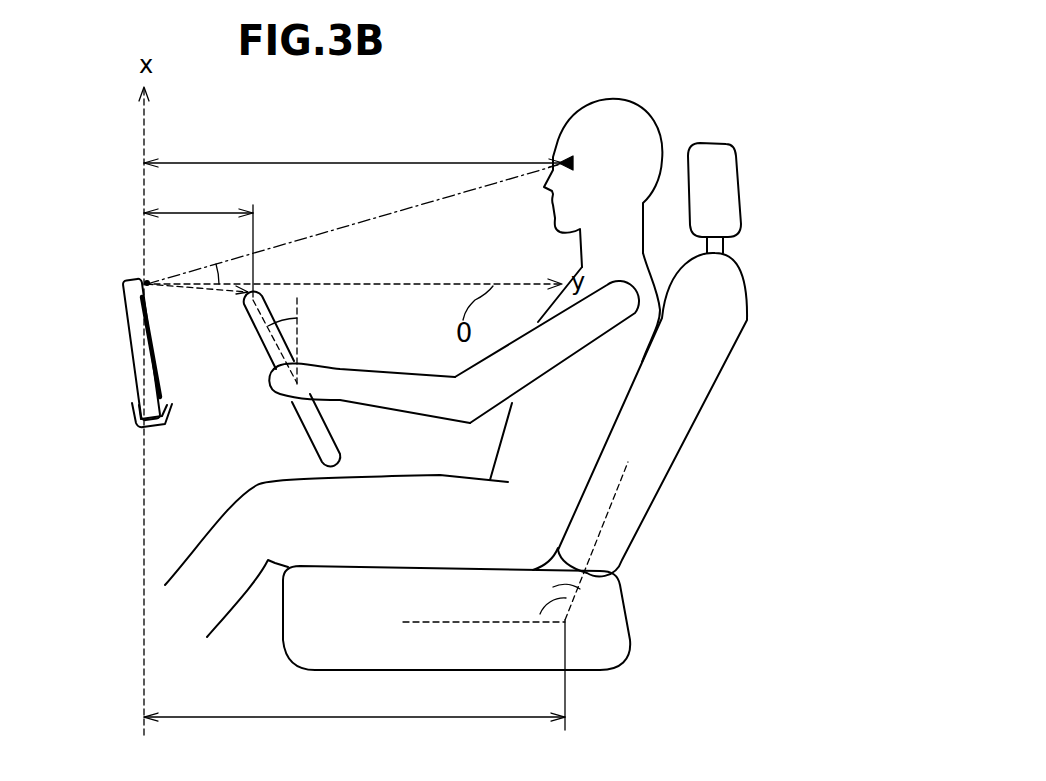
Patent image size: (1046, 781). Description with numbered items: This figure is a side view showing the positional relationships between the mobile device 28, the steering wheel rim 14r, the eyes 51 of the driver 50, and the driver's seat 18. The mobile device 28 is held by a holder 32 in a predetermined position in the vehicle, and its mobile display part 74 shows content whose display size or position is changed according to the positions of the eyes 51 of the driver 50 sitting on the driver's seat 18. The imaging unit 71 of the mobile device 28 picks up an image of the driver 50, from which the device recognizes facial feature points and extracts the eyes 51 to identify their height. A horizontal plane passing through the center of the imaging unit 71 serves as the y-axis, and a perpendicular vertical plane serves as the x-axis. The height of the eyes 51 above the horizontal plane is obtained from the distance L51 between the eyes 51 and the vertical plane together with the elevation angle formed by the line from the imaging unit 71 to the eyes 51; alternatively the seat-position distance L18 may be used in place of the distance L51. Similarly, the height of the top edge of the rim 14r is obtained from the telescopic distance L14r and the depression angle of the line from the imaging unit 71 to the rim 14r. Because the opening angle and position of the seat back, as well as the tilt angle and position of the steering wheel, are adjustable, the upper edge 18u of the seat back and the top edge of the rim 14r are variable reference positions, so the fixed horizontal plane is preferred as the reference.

The driver 50 is at (612, 100).
The eyes 51 is at (560, 160).
The driver's seat 18 is at (673, 408).
The upper edge of the seat back 18u is at (732, 252).
The rim of the steering wheel 14r is at (252, 302).
The mobile device 28 is at (128, 280).
The mobile display part 74 is at (140, 353).
The imaging unit 71 is at (147, 283).
The holder 32 is at (158, 430).
The distance between the driver's eyes and the vertical plane L51 is at (353, 150).
The distance between the top edge of the rim and the vertical plane L14r is at (198, 201).
The distance representing the seat position L18 is at (354, 705).